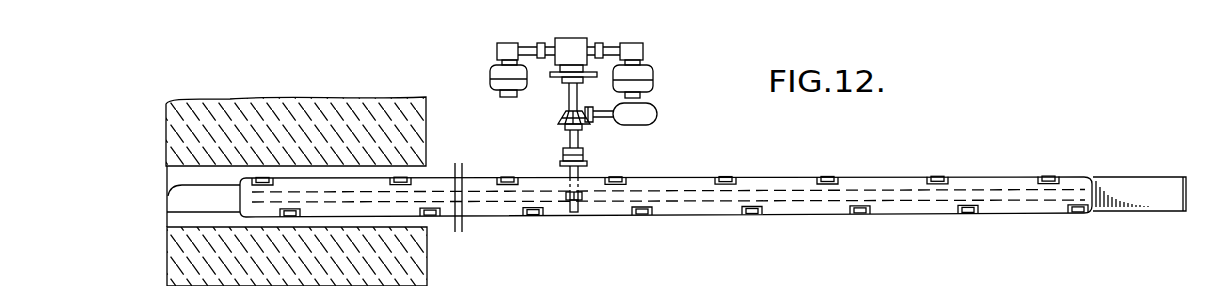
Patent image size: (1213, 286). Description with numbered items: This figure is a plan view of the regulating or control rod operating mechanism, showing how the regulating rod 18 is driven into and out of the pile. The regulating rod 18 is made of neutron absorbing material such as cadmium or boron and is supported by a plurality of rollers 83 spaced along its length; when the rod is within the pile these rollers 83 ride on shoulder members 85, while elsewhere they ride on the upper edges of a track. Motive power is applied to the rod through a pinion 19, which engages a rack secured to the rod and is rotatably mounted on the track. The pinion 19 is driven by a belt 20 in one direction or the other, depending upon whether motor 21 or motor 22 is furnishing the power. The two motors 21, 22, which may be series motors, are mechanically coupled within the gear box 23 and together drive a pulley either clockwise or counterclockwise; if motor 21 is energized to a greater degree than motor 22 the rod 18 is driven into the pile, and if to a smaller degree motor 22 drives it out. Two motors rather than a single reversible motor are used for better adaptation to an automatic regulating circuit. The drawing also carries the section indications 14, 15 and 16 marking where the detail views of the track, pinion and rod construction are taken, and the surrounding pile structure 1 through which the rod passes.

The wall / housing block 1 is at (163, 117).
The shoulder members 85 is at (168, 193).
The regulating rod 18 is at (672, 187).
The rollers 83 is at (751, 216).
The pinion 19 is at (567, 201).
The valve unit 15 is at (562, 158).
The belt 20 is at (566, 78).
The gear box 23 is at (575, 27).
The motor 21 is at (498, 78).
The motor 22 is at (650, 78).
The section line 14 is at (303, 150).
The section line 16 is at (896, 153).